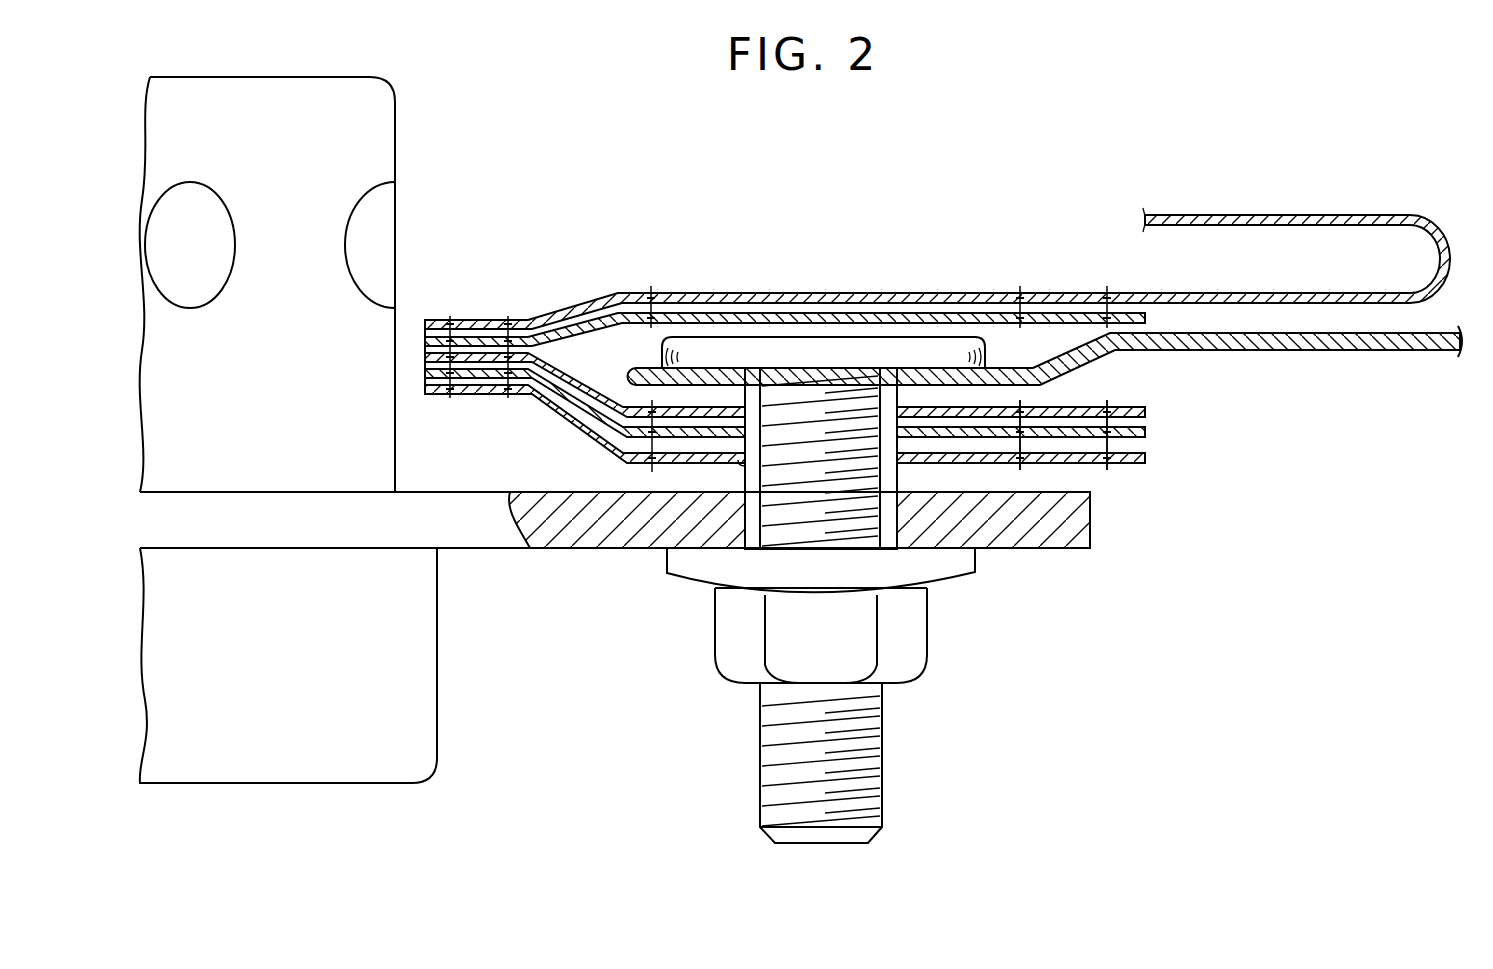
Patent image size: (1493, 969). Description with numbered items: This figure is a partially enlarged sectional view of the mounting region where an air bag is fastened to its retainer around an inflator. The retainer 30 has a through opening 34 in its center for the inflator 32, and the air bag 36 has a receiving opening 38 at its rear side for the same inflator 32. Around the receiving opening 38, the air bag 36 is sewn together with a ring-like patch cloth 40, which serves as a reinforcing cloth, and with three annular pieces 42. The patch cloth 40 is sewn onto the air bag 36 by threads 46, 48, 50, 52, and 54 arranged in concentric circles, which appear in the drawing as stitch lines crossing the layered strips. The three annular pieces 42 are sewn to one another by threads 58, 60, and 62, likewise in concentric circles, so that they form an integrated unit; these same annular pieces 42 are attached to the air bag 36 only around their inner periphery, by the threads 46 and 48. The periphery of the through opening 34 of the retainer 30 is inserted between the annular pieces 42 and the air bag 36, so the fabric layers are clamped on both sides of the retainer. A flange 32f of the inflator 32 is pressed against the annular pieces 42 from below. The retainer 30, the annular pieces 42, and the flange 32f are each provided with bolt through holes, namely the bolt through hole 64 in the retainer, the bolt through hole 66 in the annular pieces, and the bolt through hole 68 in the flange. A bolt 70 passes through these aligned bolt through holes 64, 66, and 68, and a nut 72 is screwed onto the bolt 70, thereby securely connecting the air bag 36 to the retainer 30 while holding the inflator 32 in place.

The retainer 30 is at (1385, 352).
The inflator 32 is at (315, 775).
The flange 32f is at (1025, 553).
The through opening 34 is at (937, 290).
The air bag 36 is at (1180, 213).
The receiving opening 38 is at (418, 322).
The patch cloth 40 is at (985, 335).
The annular pieces 42 is at (1145, 412).
The thread 46 is at (452, 318).
The thread 48 is at (508, 318).
The thread 50 is at (652, 286).
The thread 52 is at (1020, 286).
The thread 54 is at (1107, 286).
The thread 58 is at (650, 476).
The thread 60 is at (1020, 466).
The thread 62 is at (1107, 466).
The bolt through hole 64 is at (751, 374).
The bolt through hole 66 is at (752, 470).
The bolt through hole 68 is at (748, 530).
The bolt 70 is at (885, 762).
The nut 72 is at (928, 655).